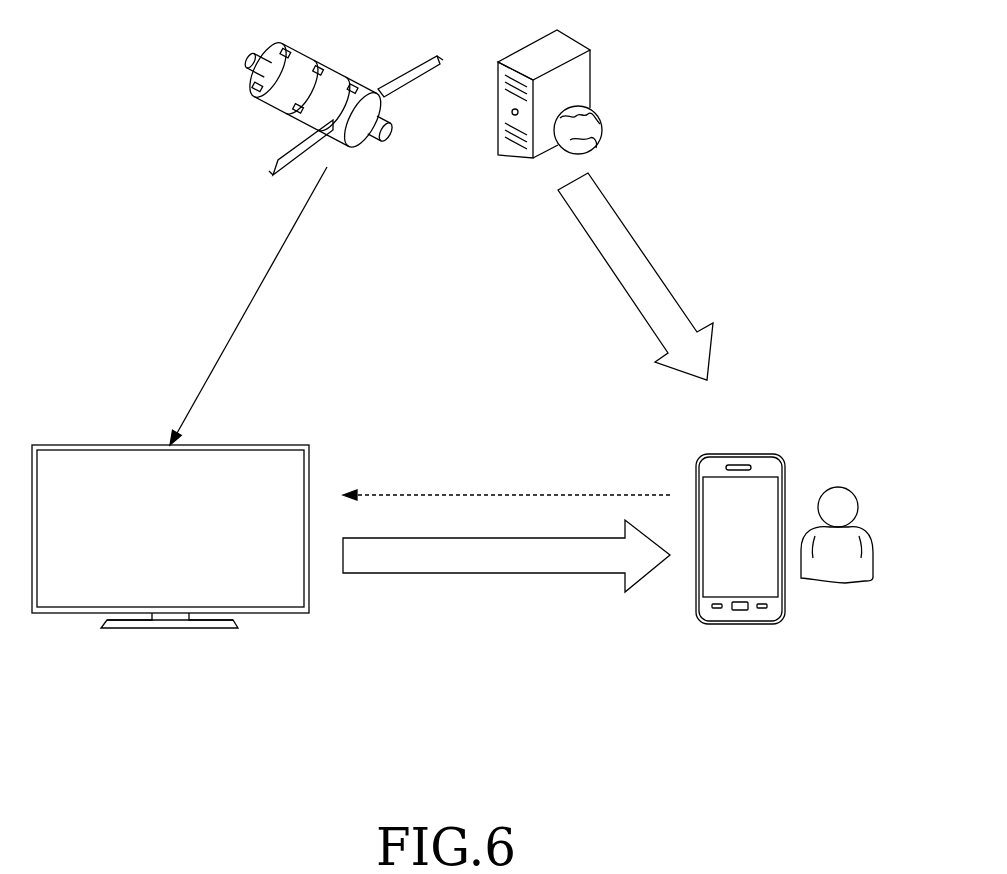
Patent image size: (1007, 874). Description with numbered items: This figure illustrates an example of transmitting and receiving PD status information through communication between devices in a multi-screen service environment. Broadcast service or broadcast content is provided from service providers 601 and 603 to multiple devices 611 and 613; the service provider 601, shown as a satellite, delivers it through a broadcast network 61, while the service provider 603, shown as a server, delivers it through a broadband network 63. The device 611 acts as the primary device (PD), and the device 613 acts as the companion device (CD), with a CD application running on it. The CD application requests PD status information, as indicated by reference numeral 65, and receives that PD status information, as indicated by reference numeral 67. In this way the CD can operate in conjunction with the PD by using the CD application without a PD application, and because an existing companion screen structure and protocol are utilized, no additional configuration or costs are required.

The service provider 601 is at (330, 64).
The service provider 603 is at (578, 36).
The broadcast network 61 is at (254, 301).
The broadband network 63 is at (645, 251).
The device 611 is at (70, 444).
The device 613 is at (738, 453).
The request of PD status information 65 is at (500, 456).
The receipt of PD status information 67 is at (500, 576).